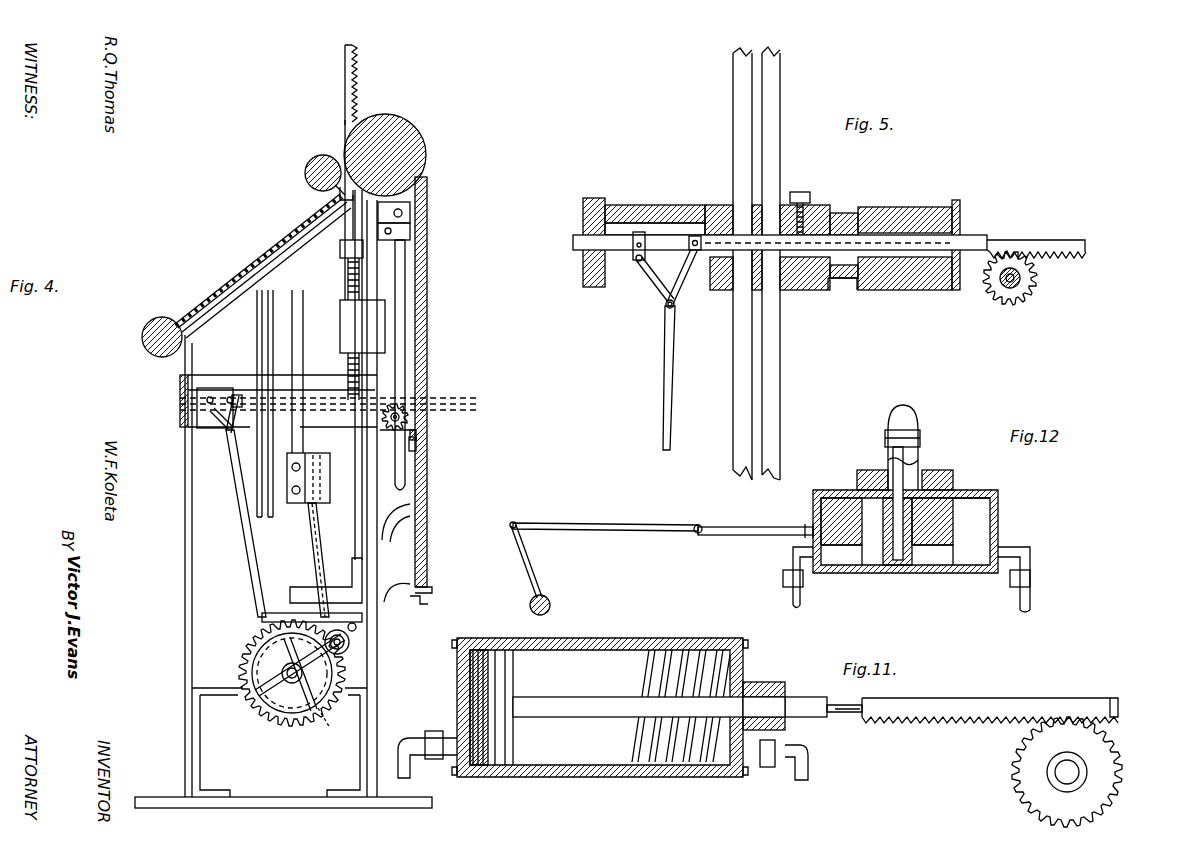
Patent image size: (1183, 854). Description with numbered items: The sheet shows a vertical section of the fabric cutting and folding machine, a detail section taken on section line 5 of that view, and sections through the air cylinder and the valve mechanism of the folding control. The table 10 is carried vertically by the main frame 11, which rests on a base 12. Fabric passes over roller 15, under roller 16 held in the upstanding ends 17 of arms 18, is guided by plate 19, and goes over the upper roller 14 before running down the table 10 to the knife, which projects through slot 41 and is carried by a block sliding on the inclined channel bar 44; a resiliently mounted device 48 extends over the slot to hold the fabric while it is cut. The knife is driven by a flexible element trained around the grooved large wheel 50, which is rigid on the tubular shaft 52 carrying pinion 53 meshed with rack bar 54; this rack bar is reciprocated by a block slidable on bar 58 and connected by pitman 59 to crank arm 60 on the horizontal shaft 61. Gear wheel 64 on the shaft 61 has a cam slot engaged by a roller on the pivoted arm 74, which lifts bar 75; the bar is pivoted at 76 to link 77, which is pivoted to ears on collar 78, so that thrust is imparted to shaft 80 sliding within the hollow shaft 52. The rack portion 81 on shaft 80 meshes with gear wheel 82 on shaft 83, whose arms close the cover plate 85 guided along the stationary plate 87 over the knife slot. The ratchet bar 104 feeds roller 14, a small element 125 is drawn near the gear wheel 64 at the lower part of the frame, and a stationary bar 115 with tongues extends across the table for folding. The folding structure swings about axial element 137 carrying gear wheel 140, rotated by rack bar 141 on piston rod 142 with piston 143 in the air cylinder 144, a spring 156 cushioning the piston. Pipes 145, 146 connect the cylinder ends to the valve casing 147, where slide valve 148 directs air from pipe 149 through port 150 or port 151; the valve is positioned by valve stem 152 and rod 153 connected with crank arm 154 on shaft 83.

In FIG. 4, the section line 5 is at (472, 402).
In FIG. 4, the table 10 is at (428, 264).
In FIG. 4, the main frame 11 is at (185, 518).
In FIG. 5, the main frame 11 is at (583, 271).
In FIG. 4, the base 12 is at (150, 797).
In FIG. 4, the upper roller 14 is at (424, 150).
In FIG. 4, the roller 15 is at (142, 336).
In FIG. 4, the roller 16 is at (308, 165).
In FIG. 4, the upstanding ends 17 is at (335, 196).
In FIG. 4, the arms 18 is at (240, 270).
In FIG. 4, the plate 19 is at (200, 305).
In FIG. 4, the slot 41 is at (430, 440).
In FIG. 4, the inclined channel bar 44 is at (402, 346).
In FIG. 4, the resiliently mounted device 48 is at (428, 601).
In FIG. 4, the large wheel 50 is at (278, 296).
In FIG. 5, the large wheel 50 is at (776, 393).
In FIG. 5, the tubular shaft 52 is at (960, 224).
In FIG. 5, the pinion 53 is at (845, 291).
In FIG. 4, the rack bar 54 is at (303, 298).
In FIG. 4, the bar 58 is at (315, 556).
In FIG. 4, the pitman 59 is at (310, 453).
In FIG. 4, the crank arm 60 is at (320, 664).
In FIG. 4, the shaft 61 is at (262, 702).
In FIG. 4, the gear wheel 64 is at (243, 650).
In FIG. 4, the pivoted arm 74 is at (283, 611).
In FIG. 4, the bar 75 is at (246, 558).
In FIG. 5, the bar 75 is at (672, 392).
In FIG. 4, the pivot 76 is at (230, 433).
In FIG. 5, the pivot 76 is at (664, 300).
In FIG. 4, the link 77 is at (212, 416).
In FIG. 5, the link 77 is at (652, 280).
In FIG. 5, the collar 78 is at (641, 232).
In FIG. 4, the shaft 80 is at (180, 396).
In FIG. 5, the shaft 80 is at (620, 235).
In FIG. 4, the rack portion 81 is at (378, 387).
In FIG. 4, the gear wheel 82 is at (385, 426).
In FIG. 5, the gear wheel 82 is at (1037, 287).
In FIG. 4, the shaft 83 is at (408, 418).
In FIG. 5, the shaft 83 is at (1015, 301).
In FIG. 12, the shaft 83 is at (550, 600).
In FIG. 4, the cover plate 85 is at (430, 432).
In FIG. 5, the stationary plate 87 is at (1043, 252).
In FIG. 4, the ratchet bar 104 is at (345, 83).
In FIG. 4, the stationary bar 115 is at (430, 445).
In FIG. 4, the pinion 125 is at (352, 631).
In FIG. 11, the axial element 137 is at (1047, 772).
In FIG. 11, the gear wheel 140 is at (1118, 752).
In FIG. 11, the rack bar 141 is at (1115, 698).
In FIG. 11, the piston rod 142 is at (813, 697).
In FIG. 11, the piston 143 is at (505, 710).
In FIG. 11, the air cylinder 144 is at (632, 650).
In FIG. 12, the pipe 145 is at (803, 597).
In FIG. 11, the pipe 145 is at (410, 775).
In FIG. 12, the pipe 146 is at (1030, 598).
In FIG. 11, the pipe 146 is at (808, 771).
In FIG. 12, the valve casing 147 is at (998, 514).
In FIG. 12, the valve 148 is at (975, 490).
In FIG. 12, the pipe 149 is at (916, 418).
In FIG. 12, the port 150 is at (910, 565).
In FIG. 12, the valve port 151 is at (875, 565).
In FIG. 12, the valve stem 152 is at (730, 527).
In FIG. 12, the rod 153 is at (585, 523).
In FIG. 12, the crank arm 154 is at (532, 572).
In FIG. 11, the spring 156 is at (473, 697).